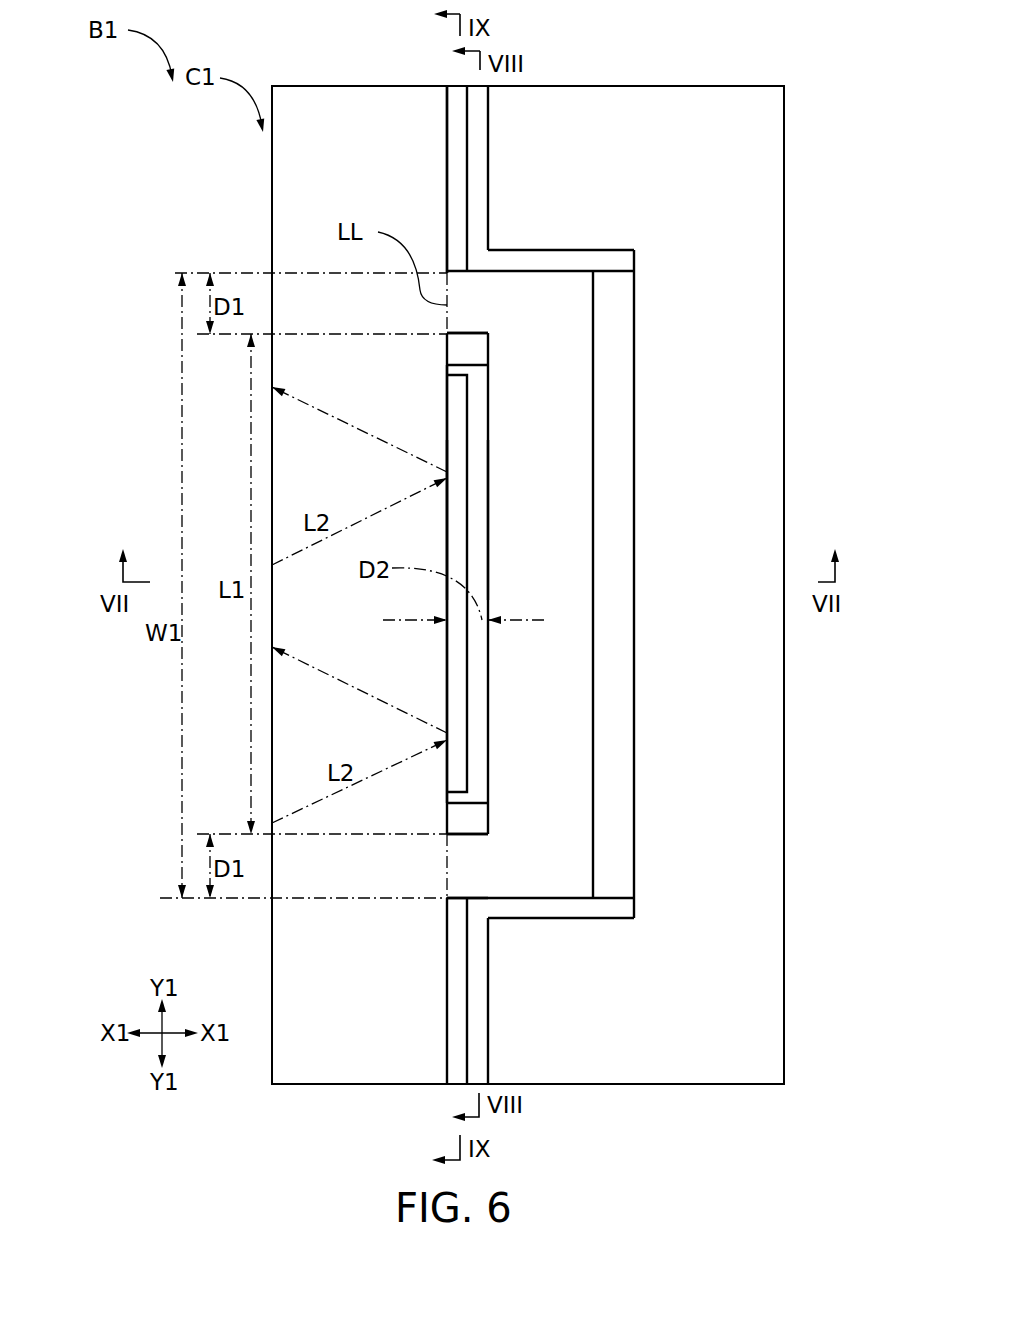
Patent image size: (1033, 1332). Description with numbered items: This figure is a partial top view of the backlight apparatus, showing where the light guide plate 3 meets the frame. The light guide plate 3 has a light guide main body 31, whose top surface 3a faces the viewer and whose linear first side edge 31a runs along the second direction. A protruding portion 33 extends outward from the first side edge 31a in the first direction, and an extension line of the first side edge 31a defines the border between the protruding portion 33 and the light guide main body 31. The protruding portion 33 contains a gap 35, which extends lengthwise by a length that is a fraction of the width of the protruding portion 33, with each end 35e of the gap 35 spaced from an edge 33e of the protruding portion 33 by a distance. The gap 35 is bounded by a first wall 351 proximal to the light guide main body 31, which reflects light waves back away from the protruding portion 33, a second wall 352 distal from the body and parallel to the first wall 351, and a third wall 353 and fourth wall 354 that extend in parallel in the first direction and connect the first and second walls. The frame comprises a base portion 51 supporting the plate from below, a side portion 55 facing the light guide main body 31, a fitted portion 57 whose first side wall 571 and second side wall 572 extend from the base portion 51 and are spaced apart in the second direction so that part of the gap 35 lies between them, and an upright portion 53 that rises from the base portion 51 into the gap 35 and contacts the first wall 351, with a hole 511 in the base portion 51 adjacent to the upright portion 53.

The light guide plate 3 is at (375, 1013).
The light guide main body 31 is at (313, 1013).
The top surface 3a is at (416, 1013).
The first side edge 31a is at (449, 122).
The base portion 51 is at (452, 170).
The side portion 55 is at (478, 226).
The fitted portion 57 is at (610, 905).
The second side wall 572 is at (483, 272).
The first side wall 571 is at (480, 897).
The protruding portion 33 is at (565, 727).
The edge of the protruding portion 33e is at (455, 900).
The gap 35 is at (482, 675).
The fourth wall 354 is at (452, 334).
The third wall 353 is at (460, 834).
The end of the gap 35e is at (468, 334).
The first wall 351 is at (447, 400).
The second wall 352 is at (488, 415).
The hole 511 is at (477, 508).
The upright portion 53 is at (457, 547).